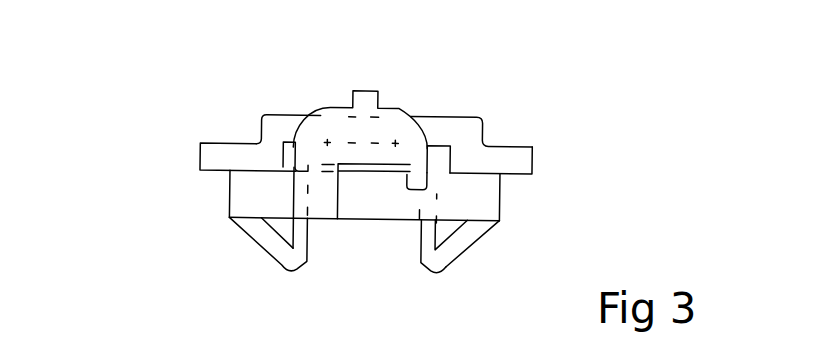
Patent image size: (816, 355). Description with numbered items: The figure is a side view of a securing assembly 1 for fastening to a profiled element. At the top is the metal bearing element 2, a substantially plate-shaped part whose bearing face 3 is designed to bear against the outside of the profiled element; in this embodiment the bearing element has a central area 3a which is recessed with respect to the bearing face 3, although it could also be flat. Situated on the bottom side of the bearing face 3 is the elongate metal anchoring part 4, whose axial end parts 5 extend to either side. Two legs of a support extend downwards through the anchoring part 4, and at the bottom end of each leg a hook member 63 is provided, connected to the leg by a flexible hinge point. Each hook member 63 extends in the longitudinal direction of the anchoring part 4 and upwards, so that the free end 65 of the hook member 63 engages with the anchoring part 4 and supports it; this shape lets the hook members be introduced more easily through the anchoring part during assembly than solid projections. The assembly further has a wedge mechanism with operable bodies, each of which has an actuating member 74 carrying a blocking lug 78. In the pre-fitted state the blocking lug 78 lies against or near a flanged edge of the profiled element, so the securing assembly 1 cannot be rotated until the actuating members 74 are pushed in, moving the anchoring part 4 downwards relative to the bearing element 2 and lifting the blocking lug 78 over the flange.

The securing assembly 1 is at (158, 134).
The bearing element 2 is at (278, 125).
The bearing face 3 is at (243, 178).
The central area 3a is at (438, 145).
The anchoring part 4 is at (370, 205).
The axial end parts 5 is at (247, 200).
The hook member 63 is at (270, 247).
The free end 65 is at (500, 222).
The actuating member 74 is at (383, 130).
The blocking lug 78 is at (410, 190).